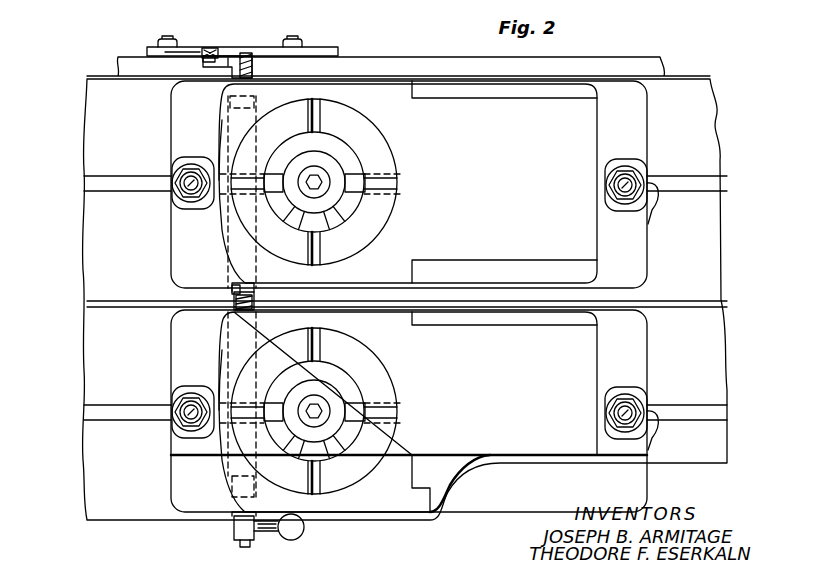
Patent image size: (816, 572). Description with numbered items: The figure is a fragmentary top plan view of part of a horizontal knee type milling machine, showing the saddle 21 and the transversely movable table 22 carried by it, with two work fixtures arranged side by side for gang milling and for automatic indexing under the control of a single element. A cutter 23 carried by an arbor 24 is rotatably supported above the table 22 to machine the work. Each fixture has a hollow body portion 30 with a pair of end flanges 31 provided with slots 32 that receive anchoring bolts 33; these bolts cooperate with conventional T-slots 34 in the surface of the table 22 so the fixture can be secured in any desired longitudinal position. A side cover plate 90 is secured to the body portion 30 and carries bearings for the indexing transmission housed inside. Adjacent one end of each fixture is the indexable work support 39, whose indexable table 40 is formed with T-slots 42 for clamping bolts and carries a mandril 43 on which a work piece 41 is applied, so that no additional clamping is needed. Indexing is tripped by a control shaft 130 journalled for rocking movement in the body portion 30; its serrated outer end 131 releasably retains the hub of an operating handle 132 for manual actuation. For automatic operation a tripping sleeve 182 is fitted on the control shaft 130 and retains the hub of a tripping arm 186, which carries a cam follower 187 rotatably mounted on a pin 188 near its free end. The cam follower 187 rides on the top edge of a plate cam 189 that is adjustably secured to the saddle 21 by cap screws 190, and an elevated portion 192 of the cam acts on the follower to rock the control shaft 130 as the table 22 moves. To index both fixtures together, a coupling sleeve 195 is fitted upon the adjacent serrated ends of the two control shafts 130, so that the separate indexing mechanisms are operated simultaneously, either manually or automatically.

The saddle 21 is at (624, 63).
The table 22 is at (694, 86).
The cutter 23 is at (221, 156).
The arbor 24 is at (250, 98).
The body portion 30 is at (594, 131).
The end flanges 31 is at (174, 121).
The slots 32 is at (653, 212).
The anchoring bolts 33 is at (181, 178).
The T-slots 34 is at (136, 186).
The indexable work support 39 is at (330, 296).
The indexable work supporting table 40 is at (372, 136).
The work piece 41 is at (292, 154).
The T-slots 42 is at (317, 108).
The mandril 43 is at (320, 194).
The side cover plate 90 is at (555, 264).
The control shaft 130 is at (246, 290).
The serrated outer end 131 is at (242, 545).
The operating handle 132 is at (270, 534).
The tripping sleeve 182 is at (247, 54).
The tripping arm 186 is at (224, 62).
The cam follower 187 is at (213, 50).
The pin 188 is at (204, 60).
The plate cam 189 is at (330, 50).
The cap screws 190 is at (168, 39).
The elevated portion 192 is at (182, 52).
The coupling sleeve 195 is at (233, 290).